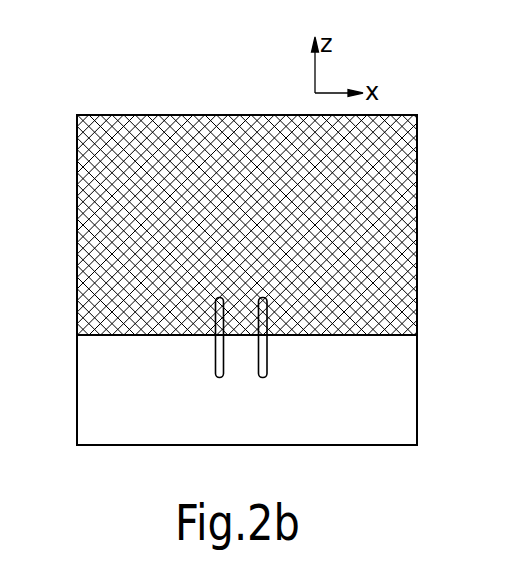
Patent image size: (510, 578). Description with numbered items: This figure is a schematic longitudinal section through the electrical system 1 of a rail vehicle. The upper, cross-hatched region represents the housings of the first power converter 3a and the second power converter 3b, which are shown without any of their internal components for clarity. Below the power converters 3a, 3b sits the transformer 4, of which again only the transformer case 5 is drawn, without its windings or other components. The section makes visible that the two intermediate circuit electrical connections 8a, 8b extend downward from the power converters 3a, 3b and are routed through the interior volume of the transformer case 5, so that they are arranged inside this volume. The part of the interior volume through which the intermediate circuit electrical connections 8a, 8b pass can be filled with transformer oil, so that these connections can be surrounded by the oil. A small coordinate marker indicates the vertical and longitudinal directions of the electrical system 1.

The electrical system 1 is at (245, 390).
The first power converter 3a is at (247, 190).
The second power converter 3b is at (197, 115).
The transformer 4 is at (395, 382).
The transformer case 5 is at (417, 410).
The intermediate circuit electrical connection 8a is at (215, 357).
The intermediate circuit electrical connection 8b is at (268, 357).